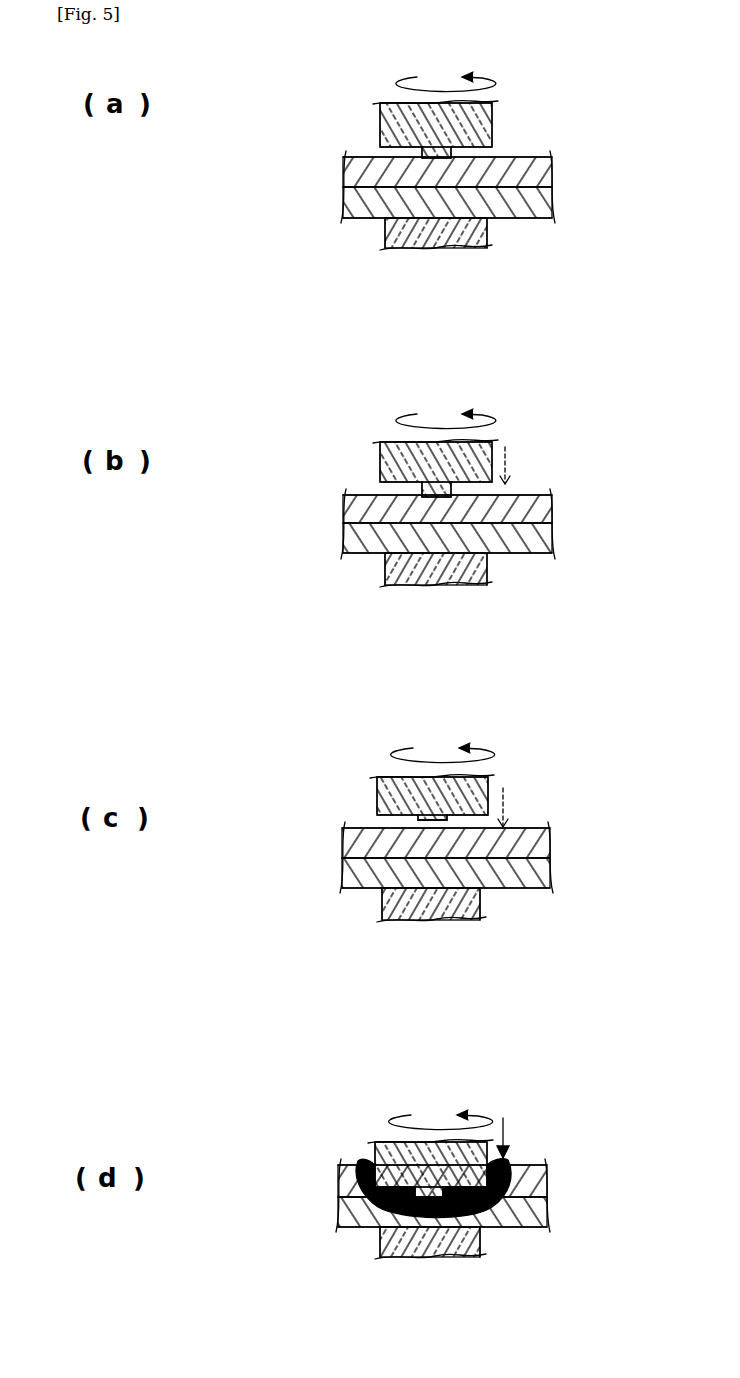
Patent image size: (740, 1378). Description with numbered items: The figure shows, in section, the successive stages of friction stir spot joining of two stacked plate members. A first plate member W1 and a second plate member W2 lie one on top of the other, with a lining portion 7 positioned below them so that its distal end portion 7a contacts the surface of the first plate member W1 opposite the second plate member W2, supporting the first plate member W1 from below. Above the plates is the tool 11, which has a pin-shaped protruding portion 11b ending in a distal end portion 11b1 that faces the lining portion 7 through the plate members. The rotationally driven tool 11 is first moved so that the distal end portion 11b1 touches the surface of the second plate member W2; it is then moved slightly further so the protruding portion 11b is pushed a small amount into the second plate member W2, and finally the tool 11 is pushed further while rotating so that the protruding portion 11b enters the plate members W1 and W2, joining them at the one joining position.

The tool 11 is at (380, 128).
The protruding portion 11b is at (452, 150).
The distal end portion 11b1 is at (437, 157).
The second plate member W2 is at (553, 166).
The first plate member W1 is at (553, 205).
The lining portion 7 is at (488, 231).
The distal end portion 7a is at (403, 238).